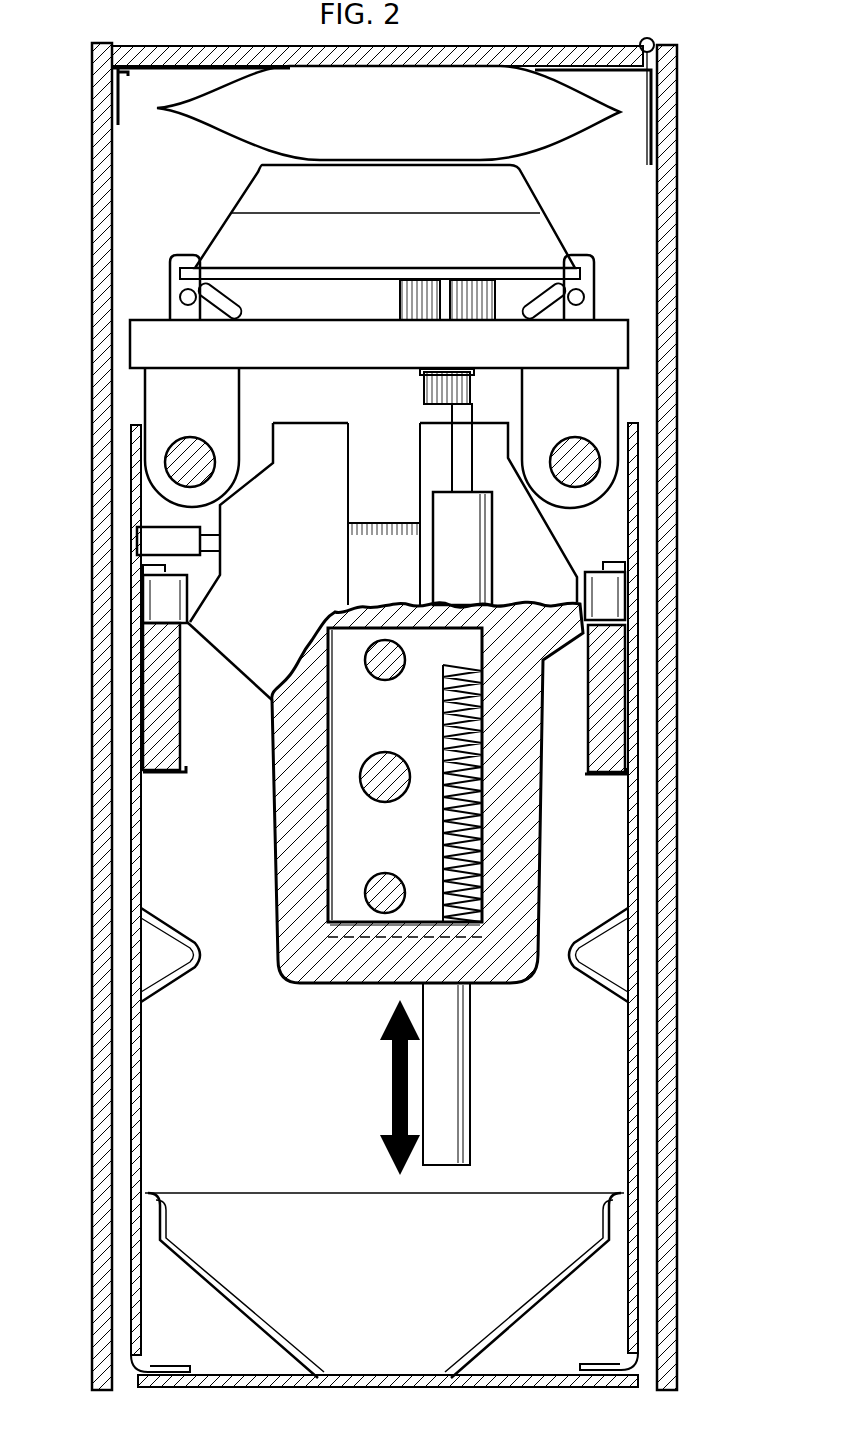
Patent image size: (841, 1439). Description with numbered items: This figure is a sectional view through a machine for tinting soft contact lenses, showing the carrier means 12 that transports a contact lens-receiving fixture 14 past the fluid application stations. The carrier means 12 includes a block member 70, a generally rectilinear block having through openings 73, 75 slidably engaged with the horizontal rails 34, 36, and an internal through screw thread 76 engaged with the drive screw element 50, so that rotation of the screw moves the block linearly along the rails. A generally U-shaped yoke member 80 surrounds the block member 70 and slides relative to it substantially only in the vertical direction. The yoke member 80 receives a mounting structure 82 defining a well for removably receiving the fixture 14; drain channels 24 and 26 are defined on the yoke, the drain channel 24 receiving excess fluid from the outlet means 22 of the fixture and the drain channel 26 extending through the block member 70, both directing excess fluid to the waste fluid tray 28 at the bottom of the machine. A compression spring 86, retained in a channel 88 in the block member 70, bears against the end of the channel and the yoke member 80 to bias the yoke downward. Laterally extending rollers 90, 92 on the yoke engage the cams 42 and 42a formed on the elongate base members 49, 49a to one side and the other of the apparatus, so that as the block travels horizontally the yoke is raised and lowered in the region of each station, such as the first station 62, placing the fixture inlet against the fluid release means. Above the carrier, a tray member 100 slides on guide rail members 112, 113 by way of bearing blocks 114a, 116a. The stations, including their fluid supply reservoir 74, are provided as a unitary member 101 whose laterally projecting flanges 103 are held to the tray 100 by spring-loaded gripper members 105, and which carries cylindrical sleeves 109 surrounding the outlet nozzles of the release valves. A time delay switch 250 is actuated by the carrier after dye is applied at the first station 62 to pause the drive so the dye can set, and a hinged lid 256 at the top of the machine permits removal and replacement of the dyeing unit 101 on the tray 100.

The carrier means 12 is at (293, 990).
The contact lens-receiving fixture 14 is at (420, 391).
The outlet means 22 is at (474, 412).
The drain channel 24 is at (450, 540).
The drain channel 26 is at (455, 1015).
The waste fluid tray 28 is at (258, 1312).
The rail 34 is at (398, 647).
The rail 36 is at (368, 886).
The cam 42 is at (167, 700).
The cam 42a is at (612, 635).
The base member 49 is at (184, 770).
The base member 49a is at (592, 778).
The drive screw element 50 is at (415, 712).
The fluid application station 62 is at (222, 152).
The block member 70 is at (379, 844).
The through opening 73 is at (375, 668).
The fluid supply reservoir 74 is at (388, 113).
The through opening 75 is at (395, 885).
The internal through screw thread 76 is at (375, 778).
The yoke member 80 is at (284, 898).
The mounting structure 82 is at (370, 472).
The compression spring 86 is at (478, 880).
The channel 88 is at (478, 708).
The roller 90 is at (605, 585).
The roller 92 is at (155, 585).
The tray member 100 is at (630, 333).
The unitary member 101 is at (528, 190).
The flange 103 is at (200, 268).
The gripper member 105 is at (172, 262).
The cylindrical sleeve 109 is at (398, 300).
The guide rail member 112 is at (580, 470).
The guide rail member 113 is at (195, 452).
The bearing block 114a is at (598, 385).
The bearing block 116a is at (222, 384).
The time delay switch 250 is at (222, 556).
The hinged lid 256 is at (560, 47).